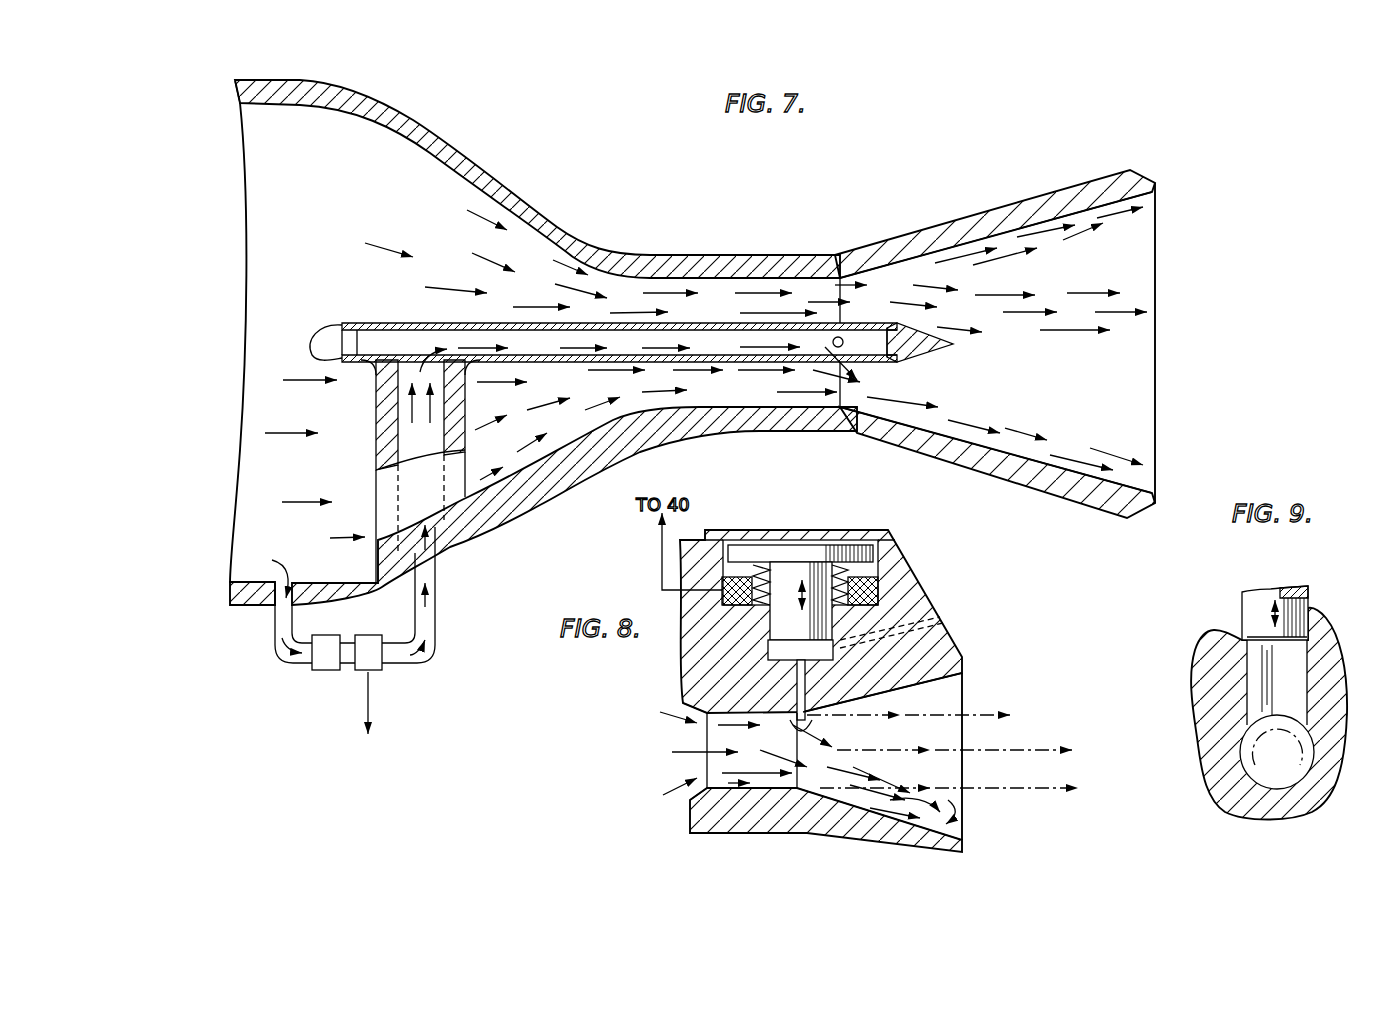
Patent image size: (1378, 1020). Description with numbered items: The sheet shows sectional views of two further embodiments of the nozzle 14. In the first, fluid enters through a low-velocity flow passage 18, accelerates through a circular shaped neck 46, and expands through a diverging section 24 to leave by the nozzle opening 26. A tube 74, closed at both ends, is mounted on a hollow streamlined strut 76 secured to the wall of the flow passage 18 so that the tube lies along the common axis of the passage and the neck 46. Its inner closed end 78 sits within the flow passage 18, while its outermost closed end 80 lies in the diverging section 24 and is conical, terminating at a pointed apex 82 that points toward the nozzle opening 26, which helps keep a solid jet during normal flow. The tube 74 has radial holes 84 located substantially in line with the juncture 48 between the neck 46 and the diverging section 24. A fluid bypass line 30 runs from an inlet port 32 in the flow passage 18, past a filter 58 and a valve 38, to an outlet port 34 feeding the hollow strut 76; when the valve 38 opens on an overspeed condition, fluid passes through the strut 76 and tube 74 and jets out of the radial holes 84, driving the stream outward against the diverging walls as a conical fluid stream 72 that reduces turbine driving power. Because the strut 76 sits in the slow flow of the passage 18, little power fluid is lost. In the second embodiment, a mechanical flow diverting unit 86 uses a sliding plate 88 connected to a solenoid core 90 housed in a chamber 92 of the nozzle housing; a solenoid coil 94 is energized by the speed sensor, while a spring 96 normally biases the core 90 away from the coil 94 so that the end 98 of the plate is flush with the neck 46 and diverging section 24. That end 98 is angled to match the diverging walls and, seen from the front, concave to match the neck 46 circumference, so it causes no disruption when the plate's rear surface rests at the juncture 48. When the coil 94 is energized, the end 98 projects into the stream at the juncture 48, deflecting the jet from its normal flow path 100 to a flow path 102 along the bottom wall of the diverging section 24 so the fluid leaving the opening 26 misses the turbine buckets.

In FIG. 7, the nozzle 14 is at (590, 242).
In FIG. 8, the nozzle 14 is at (960, 845).
In FIG. 7, the flow passage 18 is at (268, 128).
In FIG. 7, the diverging section 24 is at (1088, 243).
In FIG. 8, the diverging section 24 is at (957, 802).
In FIG. 7, the nozzle opening 26 is at (1156, 191).
In FIG. 8, the nozzle opening 26 is at (953, 678).
In FIG. 7, the fluid bypass line 30 is at (422, 663).
In FIG. 7, the inlet port 32 is at (272, 578).
In FIG. 7, the outlet port 34 is at (445, 547).
In FIG. 7, the valve 38 is at (368, 635).
In FIG. 7, the circular shaped neck 46 is at (807, 287).
In FIG. 8, the circular shaped neck 46 is at (690, 812).
In FIG. 9, the circular shaped neck 46 is at (1300, 748).
In FIG. 7, the juncture 48 is at (840, 375).
In FIG. 8, the juncture 48 is at (797, 800).
In FIG. 7, the filter 58 is at (325, 636).
In FIG. 7, the conical fluid stream 72 is at (1048, 230).
In FIG. 7, the tube 74 is at (773, 362).
In FIG. 7, the hollow streamlined strut 76 is at (468, 458).
In FIG. 7, the inner closed end of the tube 78 is at (330, 335).
In FIG. 7, the outermost closed end 80 is at (912, 337).
In FIG. 7, the pointed apex 82 is at (948, 341).
In FIG. 7, the radial holes 84 is at (845, 340).
In FIG. 8, the mechanical flow diverting unit 86 is at (938, 570).
In FIG. 8, the sliding plate 88 is at (808, 681).
In FIG. 9, the sliding plate 88 is at (1293, 670).
In FIG. 8, the solenoid core 90 is at (810, 567).
In FIG. 9, the solenoid core 90 is at (1303, 603).
In FIG. 8, the chamber 92 is at (873, 567).
In FIG. 8, the solenoid coil 94 is at (870, 590).
In FIG. 8, the spring 96 is at (752, 567).
In FIG. 8, the end of the plate 98 is at (787, 732).
In FIG. 9, the end of the plate 98 is at (1258, 750).
In FIG. 8, the normal flow path 100 is at (1007, 750).
In FIG. 8, the flow path 102 is at (957, 827).